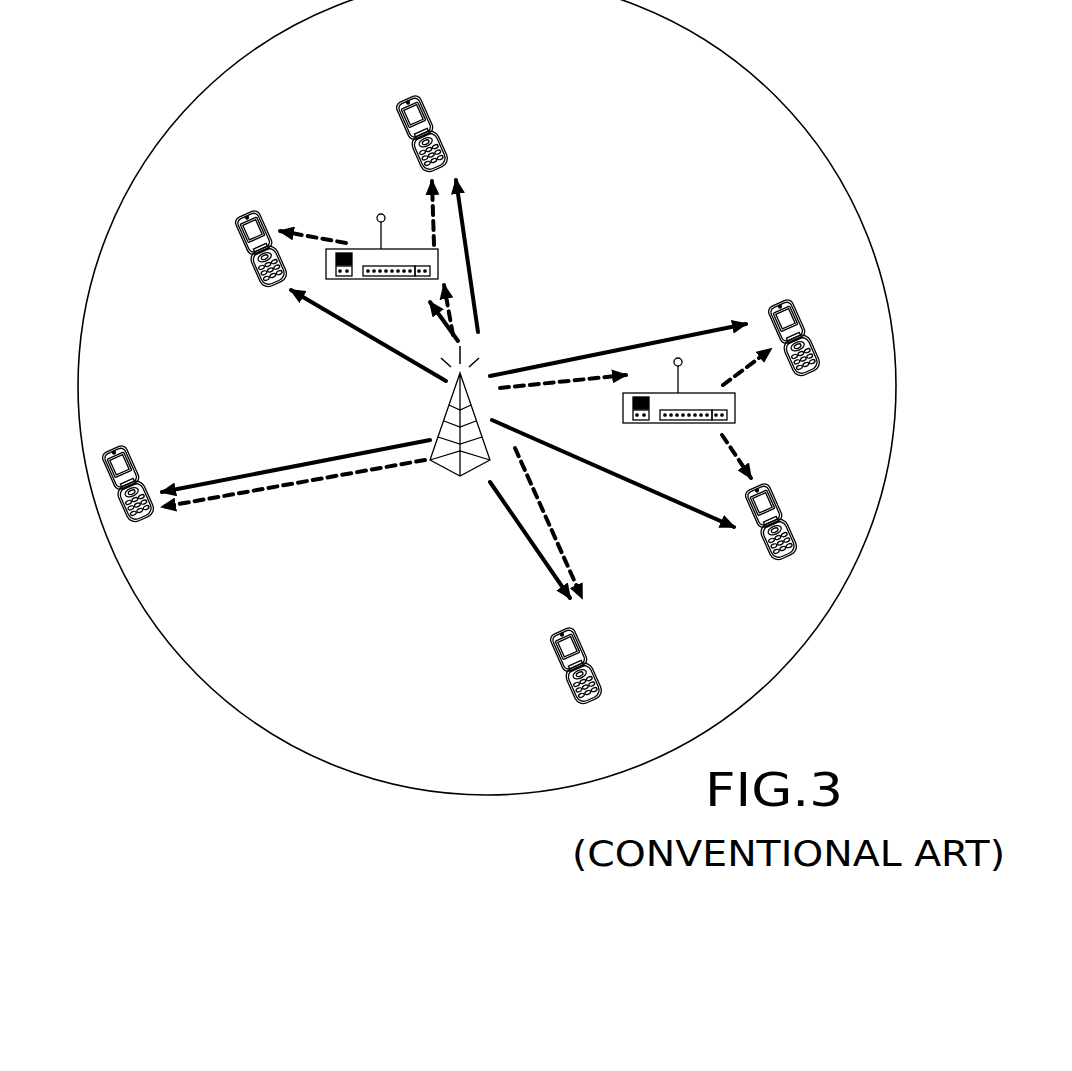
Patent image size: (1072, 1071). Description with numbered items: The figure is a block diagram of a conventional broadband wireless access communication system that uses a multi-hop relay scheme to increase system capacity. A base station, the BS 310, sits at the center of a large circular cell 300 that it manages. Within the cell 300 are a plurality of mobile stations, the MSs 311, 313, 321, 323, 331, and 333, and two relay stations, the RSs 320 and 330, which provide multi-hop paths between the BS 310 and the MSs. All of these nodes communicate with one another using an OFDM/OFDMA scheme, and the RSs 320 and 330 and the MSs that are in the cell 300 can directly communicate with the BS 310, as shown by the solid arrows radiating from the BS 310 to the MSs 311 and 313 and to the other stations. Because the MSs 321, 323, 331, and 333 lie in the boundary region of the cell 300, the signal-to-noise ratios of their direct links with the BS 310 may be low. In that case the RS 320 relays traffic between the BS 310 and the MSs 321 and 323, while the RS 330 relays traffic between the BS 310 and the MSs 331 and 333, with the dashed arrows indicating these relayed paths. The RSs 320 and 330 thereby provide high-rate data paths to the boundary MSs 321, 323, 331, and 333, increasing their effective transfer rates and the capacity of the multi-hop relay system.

The cell 300 is at (487, 397).
The BS 310 is at (460, 424).
The MS 311 is at (113, 450).
The MS 313 is at (561, 632).
The RS 320 is at (679, 403).
The MS 321 is at (779, 304).
The MS 323 is at (756, 488).
The RS 330 is at (382, 259).
The MS 331 is at (246, 215).
The MS 333 is at (407, 100).